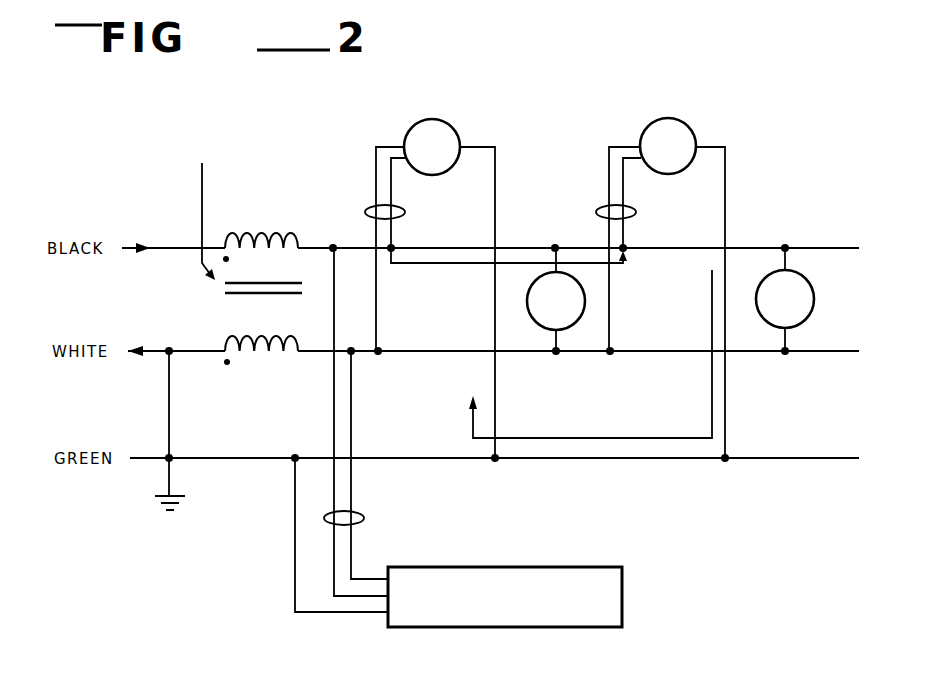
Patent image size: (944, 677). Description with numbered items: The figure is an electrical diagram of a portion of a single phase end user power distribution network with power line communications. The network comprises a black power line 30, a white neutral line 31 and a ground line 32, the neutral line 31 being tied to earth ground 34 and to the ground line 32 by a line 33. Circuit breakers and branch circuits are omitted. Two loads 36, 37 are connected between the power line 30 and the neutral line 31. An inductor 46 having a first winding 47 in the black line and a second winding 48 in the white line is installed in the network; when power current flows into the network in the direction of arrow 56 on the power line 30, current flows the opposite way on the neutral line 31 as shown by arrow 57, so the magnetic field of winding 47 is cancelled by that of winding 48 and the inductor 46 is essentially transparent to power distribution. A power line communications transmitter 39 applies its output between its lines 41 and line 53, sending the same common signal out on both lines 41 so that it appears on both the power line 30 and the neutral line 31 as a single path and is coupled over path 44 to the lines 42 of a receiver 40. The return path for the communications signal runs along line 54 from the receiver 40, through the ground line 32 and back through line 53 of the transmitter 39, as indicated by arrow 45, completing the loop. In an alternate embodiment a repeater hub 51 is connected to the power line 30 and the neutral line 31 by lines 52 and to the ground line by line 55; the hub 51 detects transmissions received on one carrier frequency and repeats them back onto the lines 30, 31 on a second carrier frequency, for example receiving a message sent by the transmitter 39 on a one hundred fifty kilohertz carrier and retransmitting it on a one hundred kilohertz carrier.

The power line 30 is at (173, 247).
The neutral line 31 is at (158, 349).
The ground line 32 is at (247, 457).
The line 33 is at (170, 413).
The earth ground 34 is at (170, 489).
The load 36 is at (585, 304).
The load 37 is at (815, 293).
The power line communications transmitter 39 is at (452, 126).
The receiver 40 is at (692, 126).
The lines 41 is at (367, 210).
The lines 42 is at (603, 212).
The path 44 is at (473, 266).
The arrow 45 is at (616, 438).
The inductor 46 is at (204, 180).
The first winding 47 is at (300, 235).
The second winding 48 is at (300, 337).
The repeater hub 51 is at (601, 567).
The lines 52 is at (362, 513).
The line 53 is at (493, 213).
The line 54 is at (726, 186).
The line 55 is at (294, 578).
The arrow 56 is at (143, 244).
The arrow 57 is at (141, 348).